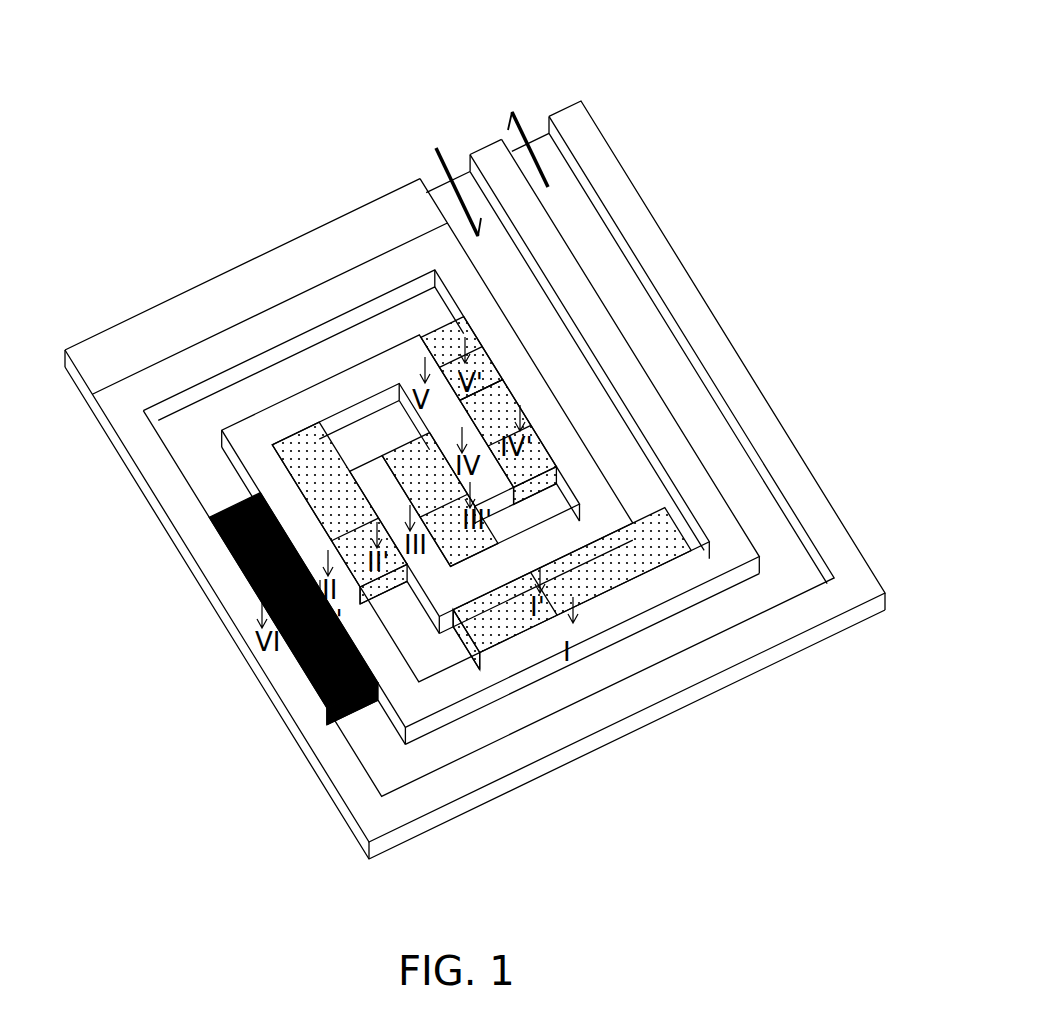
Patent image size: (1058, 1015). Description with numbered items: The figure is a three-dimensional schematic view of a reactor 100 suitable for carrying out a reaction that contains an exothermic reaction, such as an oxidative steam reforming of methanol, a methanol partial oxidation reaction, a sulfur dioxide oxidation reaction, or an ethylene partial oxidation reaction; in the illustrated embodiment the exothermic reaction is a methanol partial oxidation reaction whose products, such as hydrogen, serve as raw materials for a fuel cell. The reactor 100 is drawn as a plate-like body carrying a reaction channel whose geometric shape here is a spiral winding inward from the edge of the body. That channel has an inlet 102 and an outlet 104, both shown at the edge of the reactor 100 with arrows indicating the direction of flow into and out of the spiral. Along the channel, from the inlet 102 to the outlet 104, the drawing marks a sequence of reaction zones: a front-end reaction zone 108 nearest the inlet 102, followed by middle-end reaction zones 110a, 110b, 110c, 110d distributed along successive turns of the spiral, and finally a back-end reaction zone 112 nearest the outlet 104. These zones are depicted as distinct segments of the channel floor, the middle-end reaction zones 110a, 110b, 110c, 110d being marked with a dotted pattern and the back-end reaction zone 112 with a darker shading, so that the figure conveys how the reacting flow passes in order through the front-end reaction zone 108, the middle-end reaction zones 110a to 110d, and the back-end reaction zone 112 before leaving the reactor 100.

The reactor 100 is at (658, 78).
The inlet 102 is at (462, 160).
The outlet 104 is at (540, 108).
The front-end reaction zone 108 is at (572, 583).
The middle-end reaction zone 110a is at (325, 482).
The middle-end reaction zone 110b is at (440, 530).
The middle-end reaction zone 110c is at (536, 446).
The middle-end reaction zone 110d is at (432, 308).
The back-end reaction zone 112 is at (260, 564).